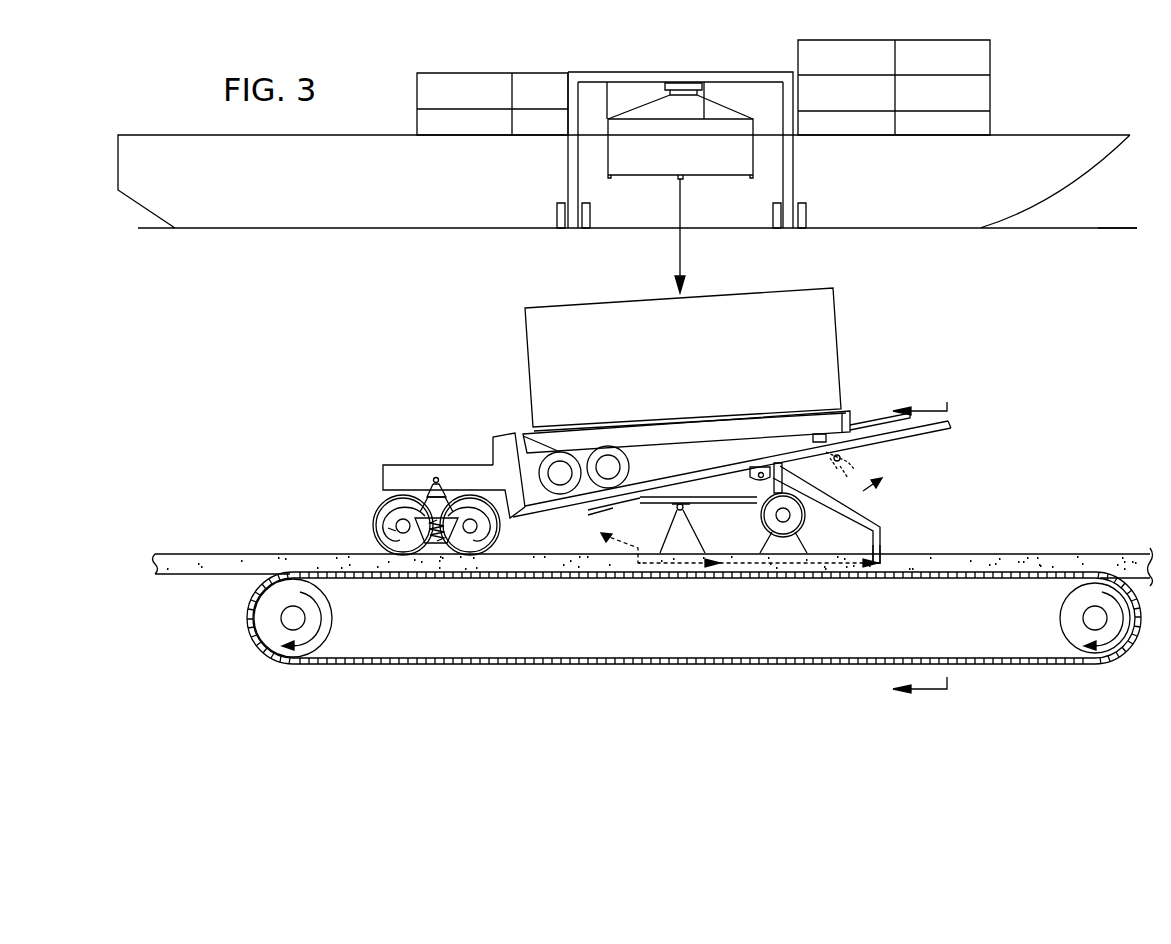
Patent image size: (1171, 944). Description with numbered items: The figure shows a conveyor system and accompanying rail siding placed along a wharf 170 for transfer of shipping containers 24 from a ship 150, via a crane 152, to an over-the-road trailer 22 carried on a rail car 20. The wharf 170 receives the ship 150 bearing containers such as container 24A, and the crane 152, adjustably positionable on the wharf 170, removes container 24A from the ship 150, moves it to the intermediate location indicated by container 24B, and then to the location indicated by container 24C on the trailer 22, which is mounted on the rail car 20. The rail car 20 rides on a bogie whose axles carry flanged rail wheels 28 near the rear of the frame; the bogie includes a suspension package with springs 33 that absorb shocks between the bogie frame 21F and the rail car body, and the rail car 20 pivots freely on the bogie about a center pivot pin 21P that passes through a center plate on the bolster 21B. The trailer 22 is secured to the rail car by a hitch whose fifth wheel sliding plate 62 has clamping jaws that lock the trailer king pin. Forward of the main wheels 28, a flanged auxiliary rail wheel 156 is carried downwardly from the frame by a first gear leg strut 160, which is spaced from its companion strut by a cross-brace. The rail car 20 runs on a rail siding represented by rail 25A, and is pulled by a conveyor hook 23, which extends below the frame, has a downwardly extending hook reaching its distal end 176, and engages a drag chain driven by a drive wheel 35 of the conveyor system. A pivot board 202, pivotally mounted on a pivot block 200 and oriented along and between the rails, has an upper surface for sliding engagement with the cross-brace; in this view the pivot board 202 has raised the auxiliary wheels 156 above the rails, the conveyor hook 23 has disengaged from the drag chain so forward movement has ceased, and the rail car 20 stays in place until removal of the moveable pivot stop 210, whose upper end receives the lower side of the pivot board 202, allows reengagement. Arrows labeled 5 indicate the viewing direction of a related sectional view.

The ship 150 is at (1007, 176).
The wharf 170 is at (1098, 228).
The shipping container 24 is at (990, 92).
The container on ship 24A is at (540, 78).
The container in intermediate location 24B is at (672, 163).
The container on trailer 24C is at (840, 352).
The crane 152 is at (790, 172).
The over-the-road trailer 22 is at (852, 412).
The fifth wheel sliding plate 62 is at (826, 438).
The rail car 20 is at (535, 521).
The pivot board 202 is at (712, 467).
The pivot block 200 is at (710, 555).
The first gear leg strut 160 is at (787, 463).
The flanged auxiliary rail wheel 156 is at (762, 519).
The moveable pivot stop 210 is at (820, 560).
The conveyor hook 23 is at (870, 520).
The distal end 176 is at (883, 543).
The viewing direction of FIG. 5 is at (927, 550).
The bolster 21B is at (423, 497).
The flanged rail wheels 28 is at (383, 510).
The springs 33 is at (441, 545).
The center pivot pin 21P is at (438, 480).
The bogie frame 21F is at (388, 528).
The first rail 25A is at (1100, 553).
The drive wheel 35 is at (1067, 626).